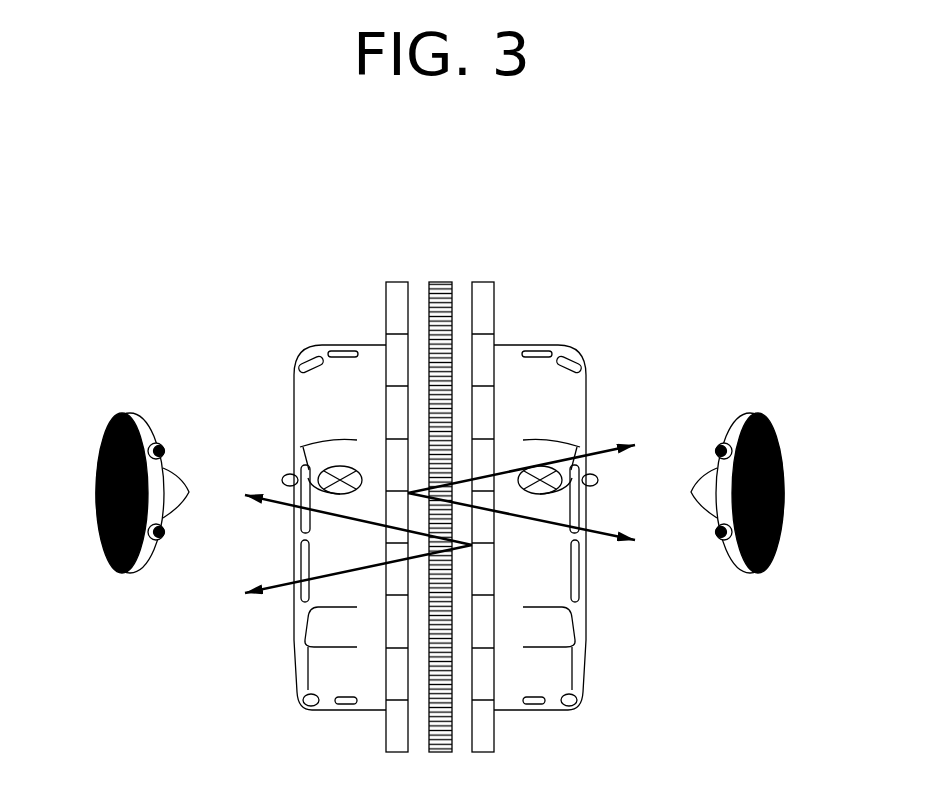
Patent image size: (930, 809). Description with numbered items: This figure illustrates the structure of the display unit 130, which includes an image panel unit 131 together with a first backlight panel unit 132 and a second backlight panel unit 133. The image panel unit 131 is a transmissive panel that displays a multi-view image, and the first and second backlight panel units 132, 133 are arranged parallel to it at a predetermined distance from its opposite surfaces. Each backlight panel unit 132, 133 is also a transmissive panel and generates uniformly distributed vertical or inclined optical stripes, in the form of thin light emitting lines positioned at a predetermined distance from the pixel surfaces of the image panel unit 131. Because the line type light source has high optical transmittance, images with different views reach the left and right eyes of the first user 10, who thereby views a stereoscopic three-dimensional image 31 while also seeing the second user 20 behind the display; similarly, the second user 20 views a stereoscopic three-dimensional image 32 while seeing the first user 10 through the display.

The first user 10 is at (120, 572).
The second user 20 is at (760, 572).
The stereoscopic 3D image 31 is at (295, 655).
The stereoscopic 3D image 32 is at (585, 655).
The display unit 130 is at (417, 196).
The image panel unit 131 is at (439, 494).
The first backlight panel unit 132 is at (385, 356).
The second backlight panel unit 133 is at (495, 356).